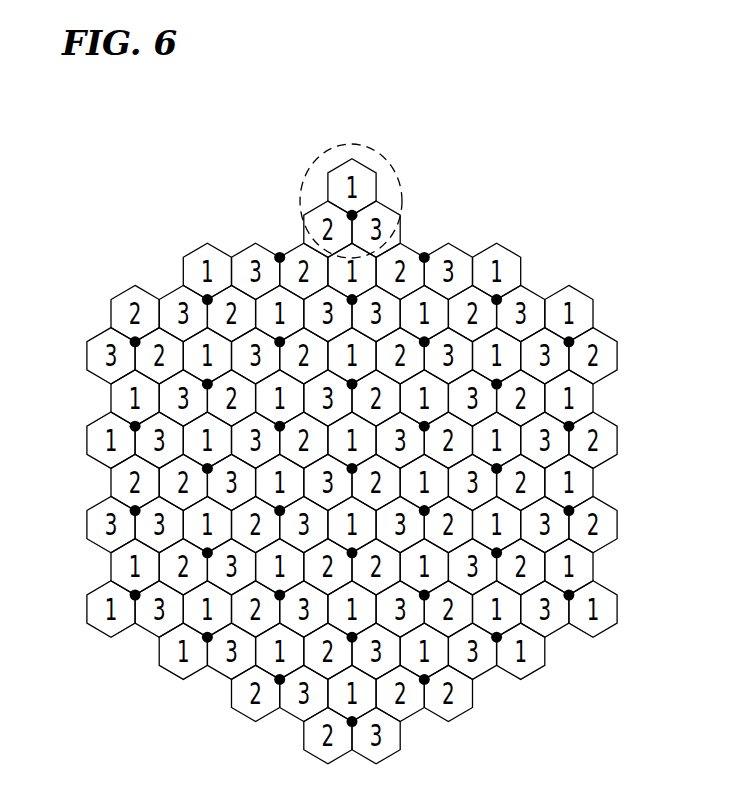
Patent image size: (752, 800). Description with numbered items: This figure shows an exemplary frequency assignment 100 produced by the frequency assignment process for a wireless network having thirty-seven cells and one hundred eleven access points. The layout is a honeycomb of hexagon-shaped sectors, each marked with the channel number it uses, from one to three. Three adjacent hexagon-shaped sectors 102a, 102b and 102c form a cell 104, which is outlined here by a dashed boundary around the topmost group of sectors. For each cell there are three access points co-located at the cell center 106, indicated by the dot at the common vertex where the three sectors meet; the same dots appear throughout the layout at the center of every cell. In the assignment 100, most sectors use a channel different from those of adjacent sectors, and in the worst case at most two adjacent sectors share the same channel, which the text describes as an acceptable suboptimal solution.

The assignment 100 is at (480, 92).
The hexagon-shaped sector 102a is at (334, 177).
The hexagon-shaped sector 102b is at (314, 221).
The hexagon-shaped sector 102c is at (386, 218).
The cell 104 is at (373, 134).
The cell center 106 is at (371, 195).